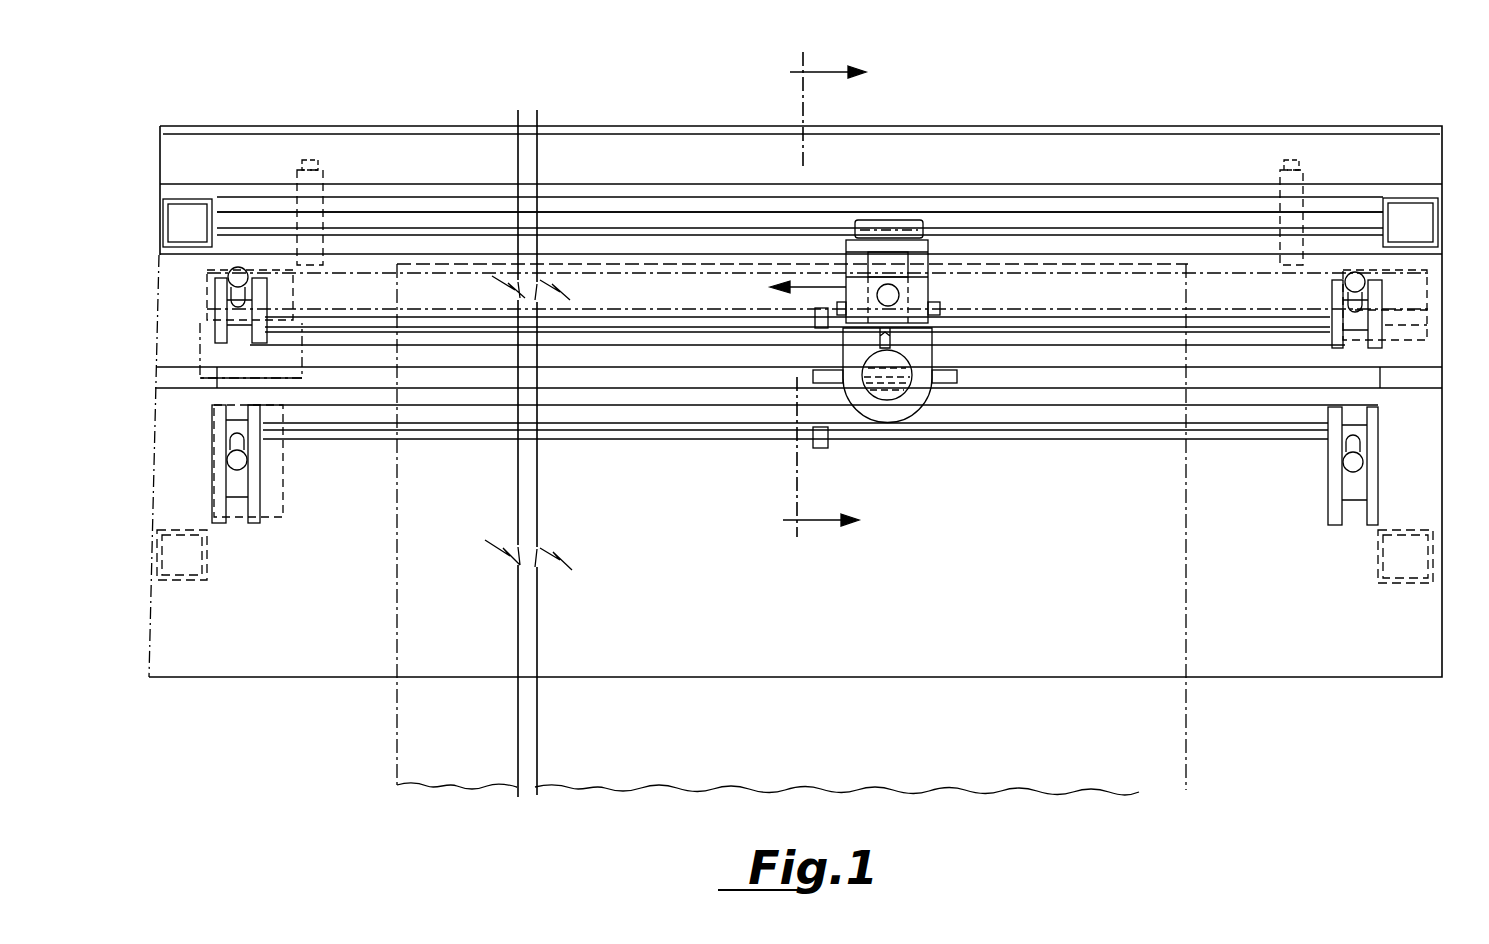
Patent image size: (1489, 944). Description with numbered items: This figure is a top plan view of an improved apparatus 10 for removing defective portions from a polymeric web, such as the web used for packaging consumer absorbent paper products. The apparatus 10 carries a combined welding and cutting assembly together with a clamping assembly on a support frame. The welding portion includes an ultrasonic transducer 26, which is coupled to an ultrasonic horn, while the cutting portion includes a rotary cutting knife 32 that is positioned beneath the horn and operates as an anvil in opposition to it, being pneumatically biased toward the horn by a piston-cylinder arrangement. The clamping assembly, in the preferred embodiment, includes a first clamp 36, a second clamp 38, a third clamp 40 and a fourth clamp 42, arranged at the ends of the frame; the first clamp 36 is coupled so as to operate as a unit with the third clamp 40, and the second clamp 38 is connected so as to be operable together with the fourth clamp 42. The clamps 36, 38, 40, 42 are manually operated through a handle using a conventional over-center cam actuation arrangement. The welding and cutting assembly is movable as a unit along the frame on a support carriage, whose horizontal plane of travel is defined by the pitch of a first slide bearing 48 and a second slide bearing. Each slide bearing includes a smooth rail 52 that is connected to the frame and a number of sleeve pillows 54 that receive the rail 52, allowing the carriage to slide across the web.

The apparatus 10 is at (1090, 108).
The ultrasonic transducer 26 is at (880, 408).
The rotary cutting knife 32 is at (940, 383).
The first clamp 36 is at (1373, 440).
The second clamp 38 is at (1375, 300).
The third clamp 40 is at (217, 478).
The fourth clamp 42 is at (218, 300).
The first slide bearing 48 is at (848, 209).
The smooth rail 52 is at (975, 220).
The sleeve pillows 54 is at (898, 215).